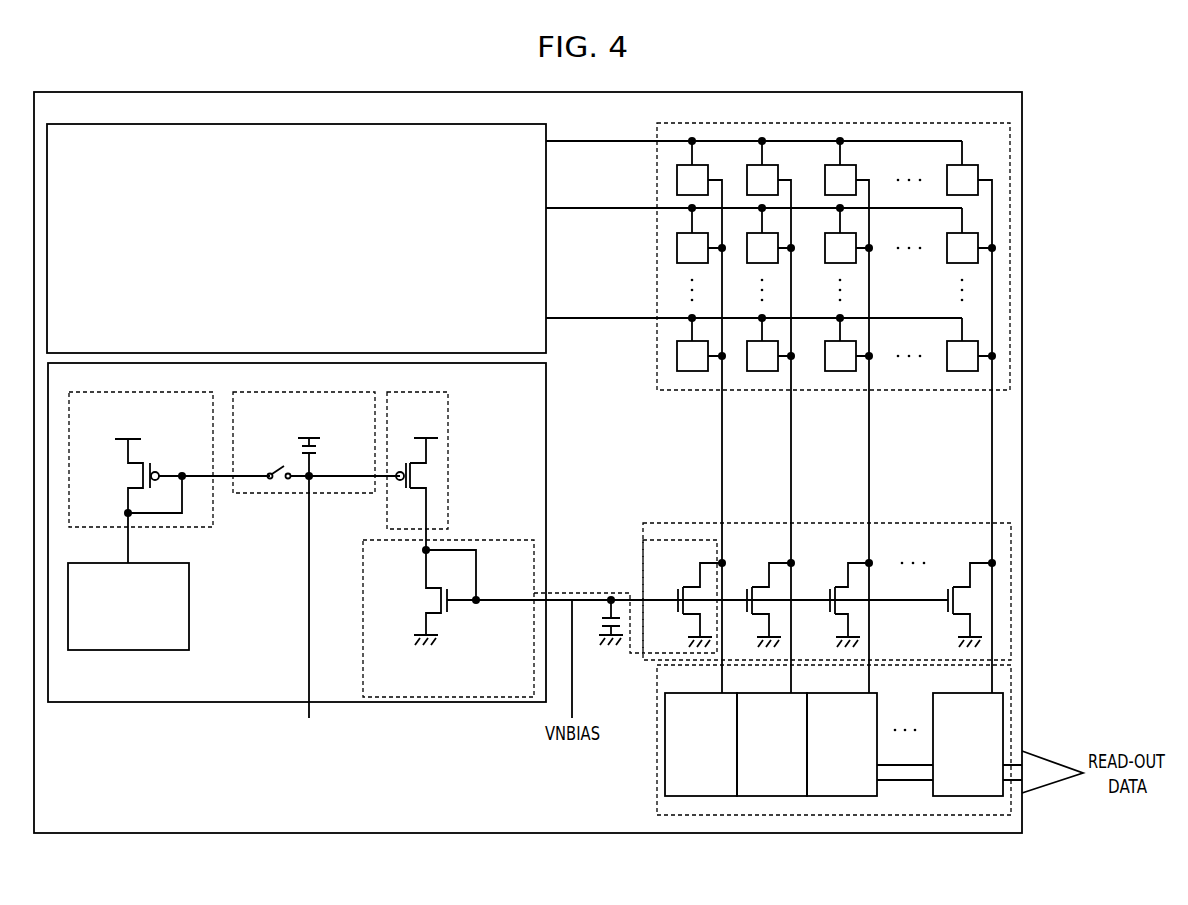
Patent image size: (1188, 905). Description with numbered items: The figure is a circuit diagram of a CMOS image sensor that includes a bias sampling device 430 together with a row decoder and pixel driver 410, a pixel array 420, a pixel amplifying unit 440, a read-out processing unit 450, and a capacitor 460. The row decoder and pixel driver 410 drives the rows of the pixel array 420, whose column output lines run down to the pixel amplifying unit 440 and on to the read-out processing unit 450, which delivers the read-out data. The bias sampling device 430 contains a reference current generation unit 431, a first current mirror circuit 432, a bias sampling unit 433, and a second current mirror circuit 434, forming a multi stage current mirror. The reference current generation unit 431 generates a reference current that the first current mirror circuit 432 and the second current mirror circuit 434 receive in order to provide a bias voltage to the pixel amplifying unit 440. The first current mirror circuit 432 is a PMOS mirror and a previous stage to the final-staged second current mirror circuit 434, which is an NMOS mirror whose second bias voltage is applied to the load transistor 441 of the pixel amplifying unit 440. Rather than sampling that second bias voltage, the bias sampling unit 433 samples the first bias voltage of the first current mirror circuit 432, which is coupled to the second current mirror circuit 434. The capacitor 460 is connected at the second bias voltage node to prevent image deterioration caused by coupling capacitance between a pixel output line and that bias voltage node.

The row decoder and pixel driver 410 is at (512, 124).
The pixel array 420 is at (975, 123).
The bias sampling device 430 is at (548, 430).
The reference current generation unit 431 is at (155, 563).
The first current mirror circuit 432 is at (418, 391).
The bias sampling unit 433 is at (338, 391).
The second current mirror circuit 434 is at (467, 541).
The pixel amplifying unit 440 is at (1011, 541).
The load transistor 441 is at (678, 588).
The read-out processing unit 450 is at (1011, 683).
The capacitor 460 is at (603, 622).